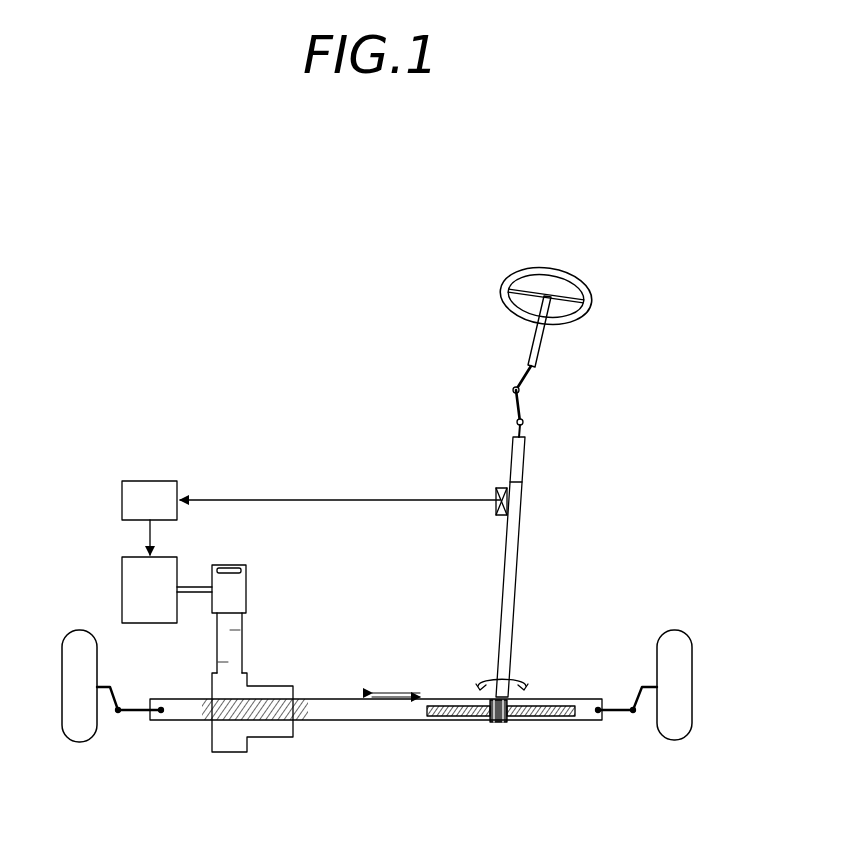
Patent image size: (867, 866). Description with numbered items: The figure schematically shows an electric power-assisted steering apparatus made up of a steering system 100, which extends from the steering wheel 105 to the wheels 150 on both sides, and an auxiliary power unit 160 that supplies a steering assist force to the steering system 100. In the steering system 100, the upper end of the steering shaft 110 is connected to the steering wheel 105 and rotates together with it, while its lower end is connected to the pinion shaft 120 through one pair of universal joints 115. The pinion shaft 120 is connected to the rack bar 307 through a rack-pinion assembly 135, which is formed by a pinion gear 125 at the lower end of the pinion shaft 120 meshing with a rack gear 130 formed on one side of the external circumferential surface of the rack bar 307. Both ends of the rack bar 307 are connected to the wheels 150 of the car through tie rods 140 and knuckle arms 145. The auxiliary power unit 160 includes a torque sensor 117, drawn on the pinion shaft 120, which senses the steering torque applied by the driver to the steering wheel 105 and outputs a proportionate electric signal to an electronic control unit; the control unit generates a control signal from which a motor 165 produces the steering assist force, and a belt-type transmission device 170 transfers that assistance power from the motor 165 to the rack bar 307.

The steering system 100 is at (588, 270).
The steering wheel 105 is at (500, 291).
The steering shaft 110 is at (548, 340).
The universal joints 115 is at (523, 422).
The torque sensor 117 is at (500, 487).
The pinion shaft 120 is at (518, 545).
The pinion gear 125 is at (500, 723).
The rack gear 130 is at (545, 716).
The rack-pinion assembly 135 is at (552, 787).
The tie rods 140 is at (620, 714).
The knuckle arms 145 is at (637, 695).
The wheels 150 is at (680, 638).
The auxiliary power unit 160 is at (264, 440).
The motor 165 is at (122, 566).
The belt-type transmission device 170 is at (245, 632).
The rack bar 307 is at (388, 722).